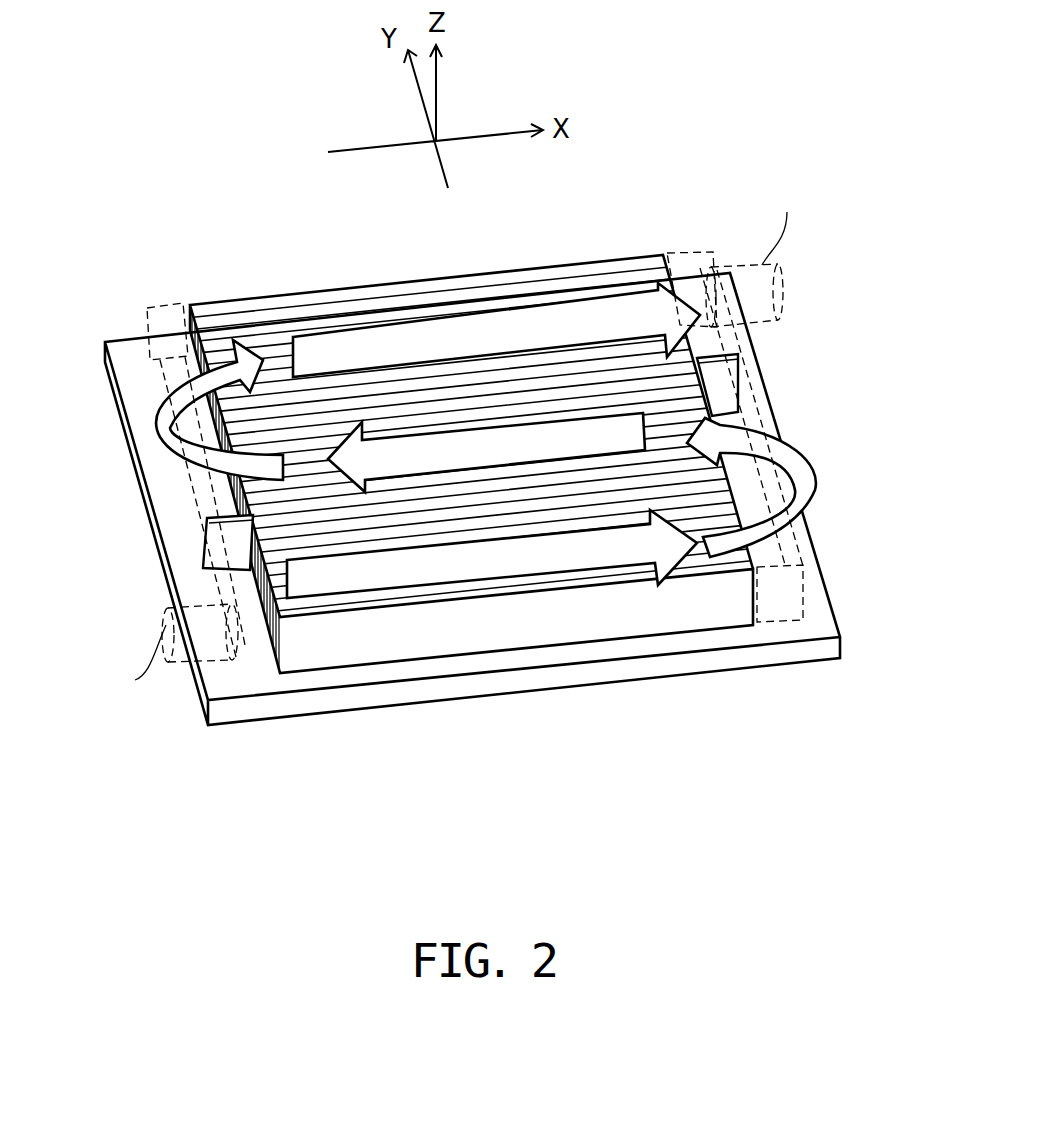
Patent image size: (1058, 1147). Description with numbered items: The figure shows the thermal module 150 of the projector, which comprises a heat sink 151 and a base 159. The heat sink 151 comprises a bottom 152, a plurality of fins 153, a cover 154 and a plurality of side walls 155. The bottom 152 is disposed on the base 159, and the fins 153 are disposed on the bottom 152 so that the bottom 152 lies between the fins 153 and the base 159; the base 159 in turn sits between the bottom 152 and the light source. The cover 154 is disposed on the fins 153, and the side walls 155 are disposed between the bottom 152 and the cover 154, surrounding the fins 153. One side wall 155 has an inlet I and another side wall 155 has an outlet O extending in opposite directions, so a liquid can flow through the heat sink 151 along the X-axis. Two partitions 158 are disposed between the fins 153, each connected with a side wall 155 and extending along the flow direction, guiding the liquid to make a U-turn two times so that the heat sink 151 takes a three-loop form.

The thermal module 150 is at (108, 290).
The heat sink 151 is at (832, 250).
The bottom 152 is at (272, 648).
The fins 153 is at (738, 598).
The cover 154 is at (812, 520).
The side walls 155 is at (150, 305).
The partition 158 is at (225, 533).
The base 159 is at (735, 658).